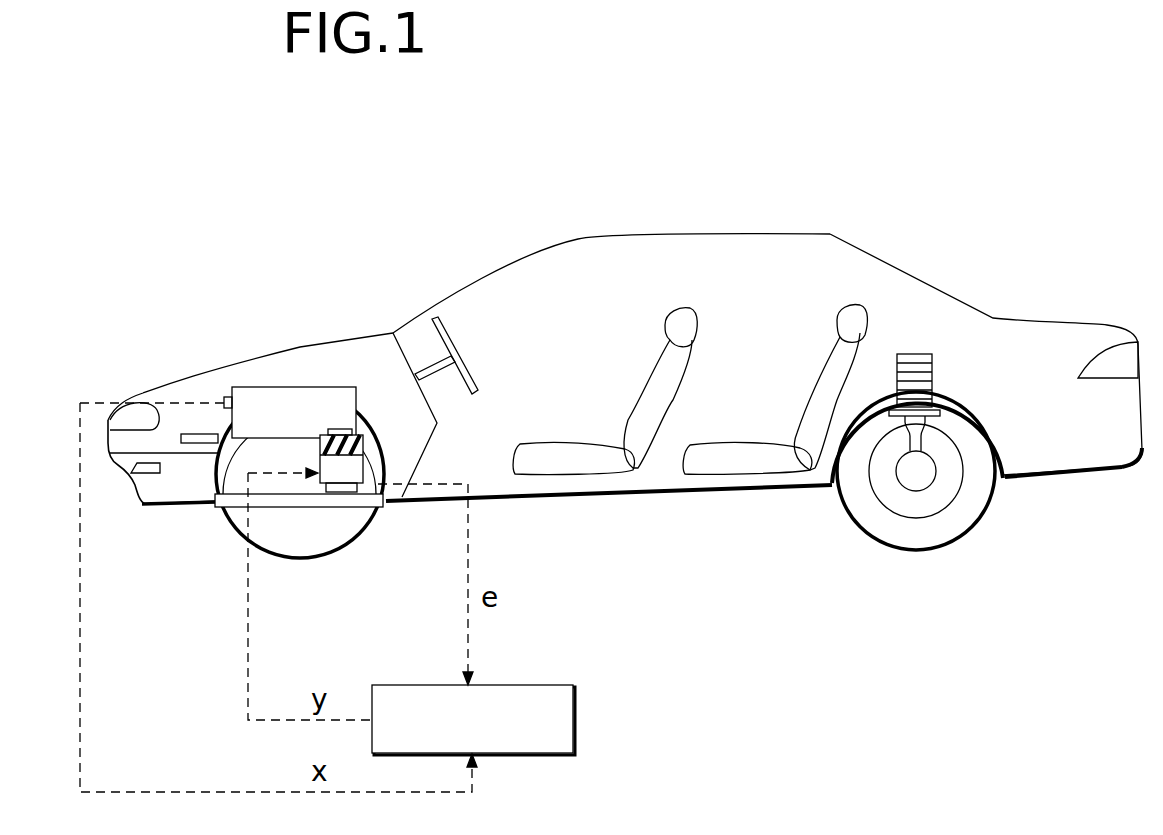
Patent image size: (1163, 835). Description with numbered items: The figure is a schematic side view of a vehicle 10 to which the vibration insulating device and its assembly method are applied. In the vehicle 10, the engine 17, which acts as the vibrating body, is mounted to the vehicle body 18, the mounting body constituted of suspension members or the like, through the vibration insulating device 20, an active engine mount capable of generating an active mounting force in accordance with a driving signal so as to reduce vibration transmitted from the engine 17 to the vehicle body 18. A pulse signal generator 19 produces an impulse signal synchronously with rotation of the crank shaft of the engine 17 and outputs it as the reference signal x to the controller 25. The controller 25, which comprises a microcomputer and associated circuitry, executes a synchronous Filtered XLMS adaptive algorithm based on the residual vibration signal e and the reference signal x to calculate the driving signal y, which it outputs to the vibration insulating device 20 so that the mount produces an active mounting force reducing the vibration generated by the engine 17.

The vehicle 10 is at (659, 222).
The engine 17 is at (263, 387).
The vehicle body 18 is at (339, 508).
The pulse signal generator 19 is at (225, 398).
The vibration insulating device 20 is at (358, 466).
The controller 25 is at (574, 718).